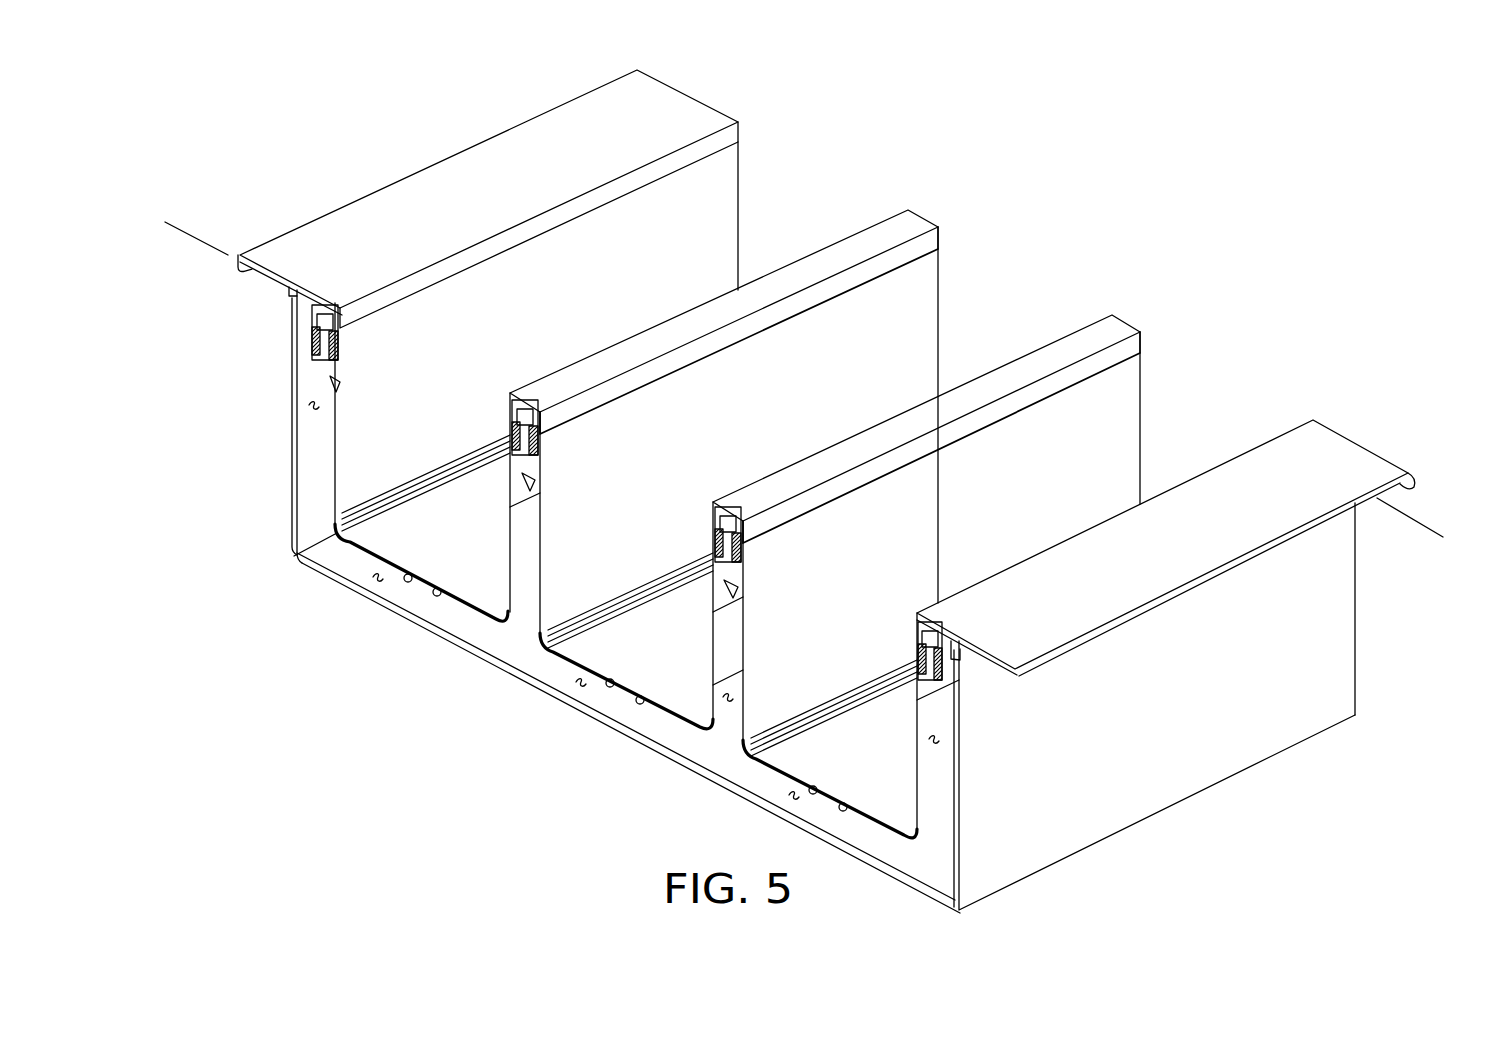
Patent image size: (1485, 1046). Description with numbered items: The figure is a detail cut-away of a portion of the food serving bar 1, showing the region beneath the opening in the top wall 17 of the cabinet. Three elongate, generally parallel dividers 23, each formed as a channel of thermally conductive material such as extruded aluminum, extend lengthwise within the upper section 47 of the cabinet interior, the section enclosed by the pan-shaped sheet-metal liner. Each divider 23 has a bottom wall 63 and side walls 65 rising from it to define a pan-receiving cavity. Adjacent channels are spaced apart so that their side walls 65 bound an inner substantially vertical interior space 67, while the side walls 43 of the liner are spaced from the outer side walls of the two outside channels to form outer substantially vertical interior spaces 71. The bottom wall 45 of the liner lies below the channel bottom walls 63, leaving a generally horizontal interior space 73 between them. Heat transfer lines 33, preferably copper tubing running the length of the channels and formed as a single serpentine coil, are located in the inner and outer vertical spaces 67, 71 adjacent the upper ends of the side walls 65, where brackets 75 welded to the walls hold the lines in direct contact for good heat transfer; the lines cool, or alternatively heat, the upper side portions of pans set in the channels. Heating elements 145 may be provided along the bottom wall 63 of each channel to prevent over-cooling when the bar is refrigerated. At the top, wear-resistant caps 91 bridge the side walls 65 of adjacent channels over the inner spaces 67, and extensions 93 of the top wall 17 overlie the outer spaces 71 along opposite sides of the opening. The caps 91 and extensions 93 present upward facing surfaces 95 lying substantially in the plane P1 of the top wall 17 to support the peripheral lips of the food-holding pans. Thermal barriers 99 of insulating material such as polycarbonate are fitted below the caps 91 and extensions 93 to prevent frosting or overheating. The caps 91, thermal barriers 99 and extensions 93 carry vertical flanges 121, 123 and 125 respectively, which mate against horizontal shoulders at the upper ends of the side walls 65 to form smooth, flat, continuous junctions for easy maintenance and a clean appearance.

The food serving bar 1 is at (388, 142).
The top wall 17 is at (303, 247).
The divider 23 is at (867, 242).
The heat transfer line 33 is at (343, 330).
The side wall of liner 43 is at (292, 505).
The bottom wall of liner 45 is at (677, 715).
The upper section 47 is at (888, 835).
The bottom wall of channel 63 is at (323, 578).
The side wall of channel 65 is at (335, 443).
The inner vertical interior space 67 is at (545, 562).
The outer vertical interior space 71 is at (305, 402).
The horizontal interior space 73 is at (368, 575).
The bracket 75 is at (323, 360).
The cap 91 is at (907, 257).
The extension of top wall 93 is at (268, 265).
The upward facing surface 95 is at (668, 112).
The thermal barrier 99 is at (297, 305).
The vertical flange of cap 121 is at (918, 272).
The vertical flange of thermal barrier 123 is at (337, 327).
The vertical flange of top wall extension 125 is at (718, 138).
The heating element 145 is at (433, 596).
The plane of top wall P1 is at (190, 233).